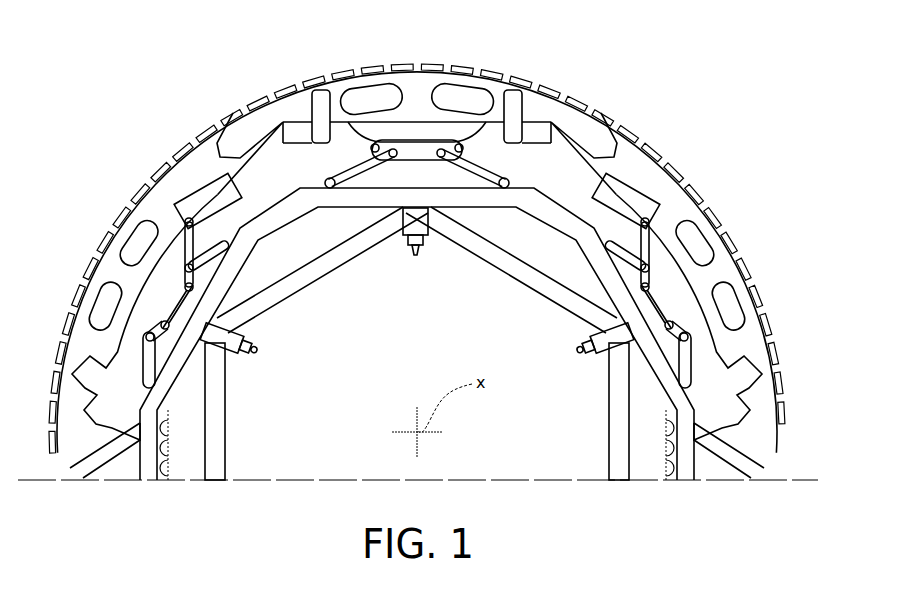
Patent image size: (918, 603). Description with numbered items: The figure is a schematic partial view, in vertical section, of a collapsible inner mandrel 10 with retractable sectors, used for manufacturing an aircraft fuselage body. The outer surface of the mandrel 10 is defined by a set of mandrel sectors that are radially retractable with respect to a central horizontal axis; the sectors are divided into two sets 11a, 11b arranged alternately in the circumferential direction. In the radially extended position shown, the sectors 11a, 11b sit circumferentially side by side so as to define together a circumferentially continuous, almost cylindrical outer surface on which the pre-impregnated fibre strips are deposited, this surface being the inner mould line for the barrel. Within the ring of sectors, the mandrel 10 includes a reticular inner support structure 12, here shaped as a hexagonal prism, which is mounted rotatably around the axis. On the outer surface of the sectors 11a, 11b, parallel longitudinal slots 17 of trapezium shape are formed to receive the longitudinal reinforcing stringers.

The collapsible inner mandrel 10 is at (417, 237).
The first set of mandrel sectors 11a is at (540, 105).
The second set of mandrel sectors 11b is at (147, 177).
The reticular inner support structure 12 is at (170, 373).
The longitudinal slots 17 is at (372, 64).